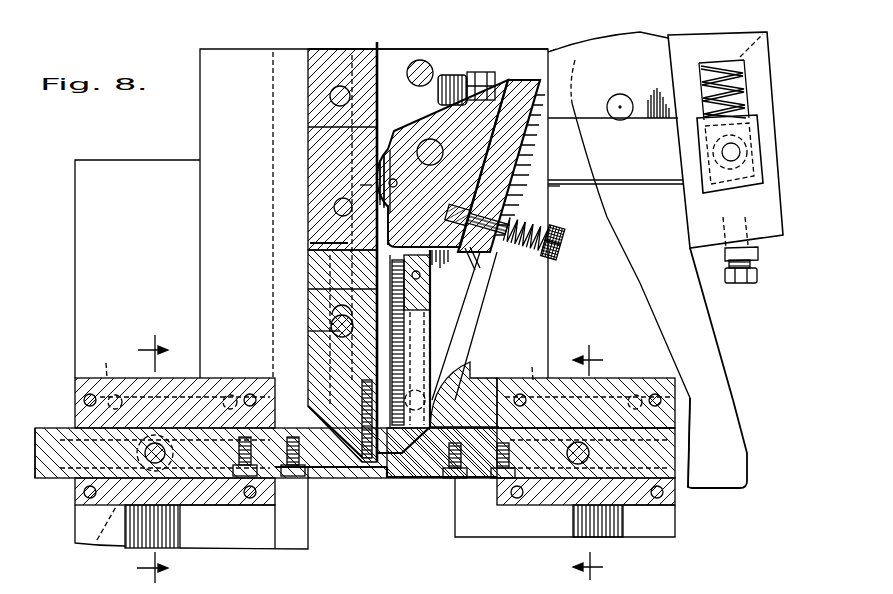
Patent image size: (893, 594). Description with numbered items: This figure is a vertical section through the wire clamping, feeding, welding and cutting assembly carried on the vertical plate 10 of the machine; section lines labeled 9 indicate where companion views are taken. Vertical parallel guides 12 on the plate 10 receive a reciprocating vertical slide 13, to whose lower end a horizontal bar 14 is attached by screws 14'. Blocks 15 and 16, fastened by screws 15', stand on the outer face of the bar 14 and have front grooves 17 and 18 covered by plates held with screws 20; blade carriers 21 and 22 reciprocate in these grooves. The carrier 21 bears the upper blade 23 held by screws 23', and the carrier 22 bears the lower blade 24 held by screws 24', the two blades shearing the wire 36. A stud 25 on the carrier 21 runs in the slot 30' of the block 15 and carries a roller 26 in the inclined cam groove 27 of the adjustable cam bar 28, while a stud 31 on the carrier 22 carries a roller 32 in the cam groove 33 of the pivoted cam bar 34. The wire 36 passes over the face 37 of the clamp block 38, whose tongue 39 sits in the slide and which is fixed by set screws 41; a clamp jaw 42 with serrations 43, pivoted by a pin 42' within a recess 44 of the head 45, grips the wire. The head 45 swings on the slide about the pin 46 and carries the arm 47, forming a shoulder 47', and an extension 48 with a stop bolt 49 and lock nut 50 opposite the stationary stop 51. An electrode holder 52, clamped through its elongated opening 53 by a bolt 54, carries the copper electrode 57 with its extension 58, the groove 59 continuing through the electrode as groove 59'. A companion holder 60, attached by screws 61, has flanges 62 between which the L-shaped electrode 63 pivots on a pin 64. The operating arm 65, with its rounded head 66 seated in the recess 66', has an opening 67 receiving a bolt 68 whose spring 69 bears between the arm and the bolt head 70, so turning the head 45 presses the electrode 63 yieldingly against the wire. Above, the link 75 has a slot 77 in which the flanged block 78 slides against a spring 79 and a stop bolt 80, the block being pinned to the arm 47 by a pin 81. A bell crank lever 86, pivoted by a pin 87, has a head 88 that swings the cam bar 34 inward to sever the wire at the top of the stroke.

The section line 9- 9 is at (144, 459).
The vertical plate 10 is at (78, 253).
The vertical parallel guides 12 is at (200, 128).
The vertical slide 13 is at (397, 50).
The horizontal bar 14 is at (288, 330).
The screws 14' is at (451, 394).
The block 15 is at (161, 388).
The screws 15' is at (319, 361).
The block 16 is at (647, 378).
The horizontal groove 17 is at (83, 424).
The horizontal groove 18 is at (665, 427).
The screws 20 is at (80, 495).
The blade carrier 21 is at (39, 480).
The blade carrier 22 is at (427, 460).
The upper horizontal blade 23 is at (331, 487).
The screws 23' is at (269, 472).
The lower horizontal blade 24 is at (443, 497).
The screws 24' is at (503, 488).
The stud 25 is at (157, 444).
The roller 26 is at (100, 544).
The cam groove 27 is at (177, 547).
The vertical cam bar 28 is at (200, 533).
The elongated horizontal slot 30' is at (346, 442).
The stud 31 is at (570, 510).
The roller 32 is at (643, 530).
The cam groove 33 is at (572, 503).
The cam bar 34 is at (678, 527).
The wire 36 is at (376, 50).
The face 37 is at (350, 50).
The clamp block 38 is at (330, 73).
The tongue 39 is at (367, 127).
The set screws 41 is at (330, 96).
The clamp jaw 42 is at (332, 181).
The pin 42' is at (326, 194).
The serrations 43 is at (389, 182).
The recess 44 is at (353, 236).
The head 45 is at (402, 129).
The pin 46 is at (537, 153).
The arm 47 is at (615, 164).
The shoulder 47' is at (569, 198).
The upwardly projecting extension 48 is at (522, 79).
The stop bolt 49 is at (455, 74).
The lock nut 50 is at (483, 71).
The stationary stop 51 is at (419, 60).
The electrode holder 52 is at (300, 300).
The elongated opening 53 is at (300, 318).
The bolt 54 is at (277, 332).
The electrode 57 is at (368, 460).
The horizontal extension 58 is at (347, 470).
The longitudinal groove 59 is at (328, 292).
The groove 59' is at (403, 500).
The companion electrode holder 60 is at (402, 328).
The screws 61 is at (312, 263).
The spaced flanges 62 is at (410, 357).
The L-shaped electrode 63 is at (428, 297).
The pin 64 is at (424, 272).
The operating arm 65 is at (548, 316).
The rounded head 66 is at (608, 48).
The recess 66' is at (570, 40).
The transverse opening 67 is at (500, 252).
The bolt 68 is at (556, 232).
The coil spring 69 is at (527, 217).
The head 70 is at (552, 247).
The link 75 is at (773, 238).
The longitudinal slot 77 is at (704, 70).
The flanged block 78 is at (764, 127).
The coil spring 79 is at (738, 80).
The stop bolt 80 is at (753, 278).
The pin 81 is at (741, 154).
The bell crank lever 86 is at (712, 331).
The pin 87 is at (628, 101).
The head 88 is at (735, 485).